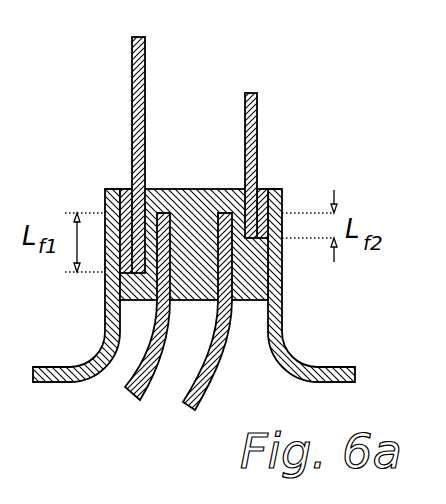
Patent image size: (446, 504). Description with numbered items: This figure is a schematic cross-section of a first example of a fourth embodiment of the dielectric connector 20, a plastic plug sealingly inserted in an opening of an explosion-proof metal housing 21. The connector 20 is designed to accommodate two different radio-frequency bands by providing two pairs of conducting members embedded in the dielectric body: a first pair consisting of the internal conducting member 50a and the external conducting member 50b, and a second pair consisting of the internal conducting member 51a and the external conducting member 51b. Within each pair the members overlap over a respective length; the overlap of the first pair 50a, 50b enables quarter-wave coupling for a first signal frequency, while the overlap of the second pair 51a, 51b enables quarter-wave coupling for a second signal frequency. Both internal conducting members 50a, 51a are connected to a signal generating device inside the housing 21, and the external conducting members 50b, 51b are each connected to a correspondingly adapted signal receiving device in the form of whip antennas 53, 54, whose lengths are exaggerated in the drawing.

The dielectric connector 20 is at (200, 188).
The explosion-proof metal housing 21 is at (282, 314).
The internal conducting member 50a is at (178, 302).
The external conducting member 50b is at (120, 189).
The internal conducting member 51a is at (240, 302).
The external conducting member 51b is at (275, 189).
The whip antenna 53 is at (145, 70).
The whip antenna 54 is at (258, 107).